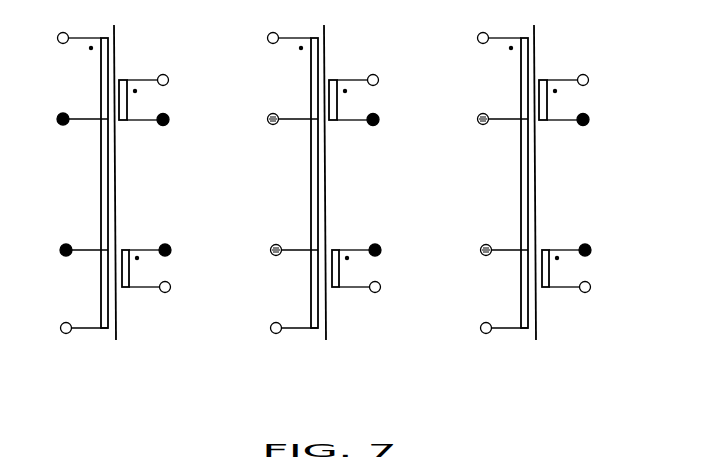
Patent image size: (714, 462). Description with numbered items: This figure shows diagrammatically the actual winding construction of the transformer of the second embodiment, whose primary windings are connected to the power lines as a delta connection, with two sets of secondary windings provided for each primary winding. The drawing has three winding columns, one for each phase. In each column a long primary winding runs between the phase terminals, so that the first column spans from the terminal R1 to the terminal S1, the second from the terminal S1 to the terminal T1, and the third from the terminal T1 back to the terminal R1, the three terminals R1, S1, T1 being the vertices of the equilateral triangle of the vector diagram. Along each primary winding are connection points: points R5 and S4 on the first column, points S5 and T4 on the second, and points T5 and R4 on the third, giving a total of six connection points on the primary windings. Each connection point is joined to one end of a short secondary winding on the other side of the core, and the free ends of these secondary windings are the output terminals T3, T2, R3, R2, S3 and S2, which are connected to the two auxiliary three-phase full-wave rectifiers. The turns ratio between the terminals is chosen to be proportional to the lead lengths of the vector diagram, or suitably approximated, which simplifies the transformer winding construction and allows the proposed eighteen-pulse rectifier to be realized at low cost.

The primary winding terminal R1 is at (290, 188).
The secondary winding output terminal R2 is at (362, 302).
The secondary winding output terminal R3 is at (360, 69).
The primary winding connection point R4 is at (433, 237).
The primary winding connection point R5 is at (218, 136).
The primary winding terminal S1 is at (183, 188).
The secondary winding output terminal S2 is at (572, 302).
The secondary winding output terminal S3 is at (570, 69).
The primary winding connection point S4 is at (325, 237).
The primary winding connection point S5 is at (428, 137).
The primary winding terminal T1 is at (392, 188).
The secondary winding output terminal T2 is at (152, 302).
The secondary winding output terminal T3 is at (150, 69).
The primary winding connection point T4 is at (223, 237).
The primary winding connection point T5 is at (327, 137).